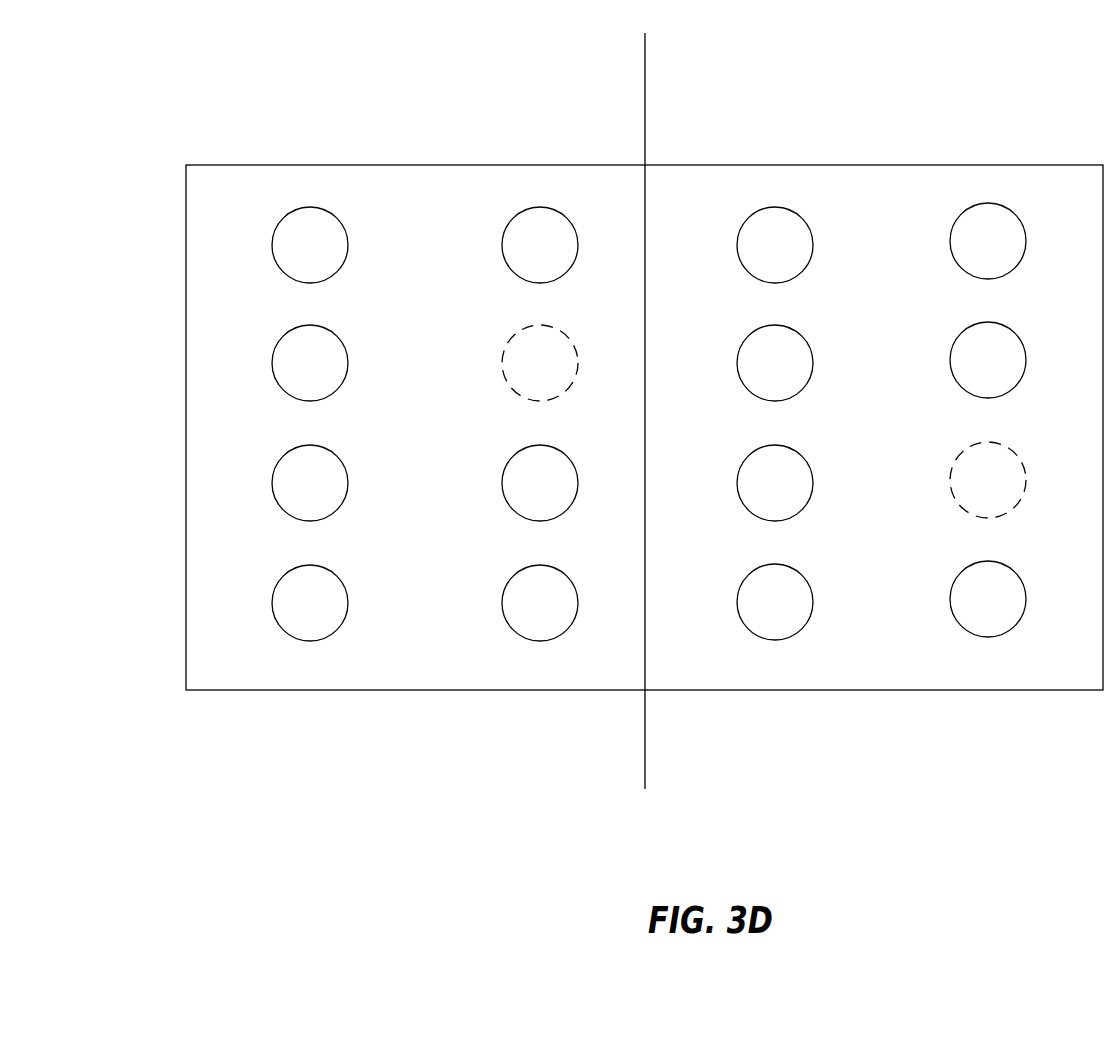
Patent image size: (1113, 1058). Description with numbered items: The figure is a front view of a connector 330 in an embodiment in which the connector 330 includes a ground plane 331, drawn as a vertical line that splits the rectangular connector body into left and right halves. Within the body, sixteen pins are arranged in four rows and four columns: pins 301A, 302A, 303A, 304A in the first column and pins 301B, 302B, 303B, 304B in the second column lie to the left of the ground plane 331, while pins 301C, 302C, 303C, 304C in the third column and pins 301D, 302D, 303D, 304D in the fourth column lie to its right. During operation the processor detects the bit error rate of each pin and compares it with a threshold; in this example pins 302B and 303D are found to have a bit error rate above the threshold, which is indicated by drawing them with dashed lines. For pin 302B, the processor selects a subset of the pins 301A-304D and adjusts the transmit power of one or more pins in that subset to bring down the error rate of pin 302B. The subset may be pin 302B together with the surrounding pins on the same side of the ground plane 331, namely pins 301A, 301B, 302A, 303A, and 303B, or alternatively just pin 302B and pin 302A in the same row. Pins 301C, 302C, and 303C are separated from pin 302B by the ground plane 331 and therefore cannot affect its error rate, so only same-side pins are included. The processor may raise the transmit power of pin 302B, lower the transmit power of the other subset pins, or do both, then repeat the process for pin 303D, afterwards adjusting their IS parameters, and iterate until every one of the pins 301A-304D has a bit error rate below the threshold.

The connector 330 is at (128, 58).
The ground plane 331 is at (645, 74).
The pin 301A is at (310, 245).
The pin 302A is at (310, 363).
The pin 303A is at (310, 483).
The pin 304A is at (310, 603).
The pin 301B is at (540, 245).
The pin 302B is at (540, 363).
The pin 303B is at (540, 483).
The pin 304B is at (540, 603).
The pin 301C is at (775, 245).
The pin 302C is at (775, 363).
The pin 303C is at (775, 483).
The pin 304C is at (775, 602).
The pin 301D is at (988, 241).
The pin 302D is at (988, 360).
The pin 303D is at (988, 480).
The pin 304D is at (988, 599).